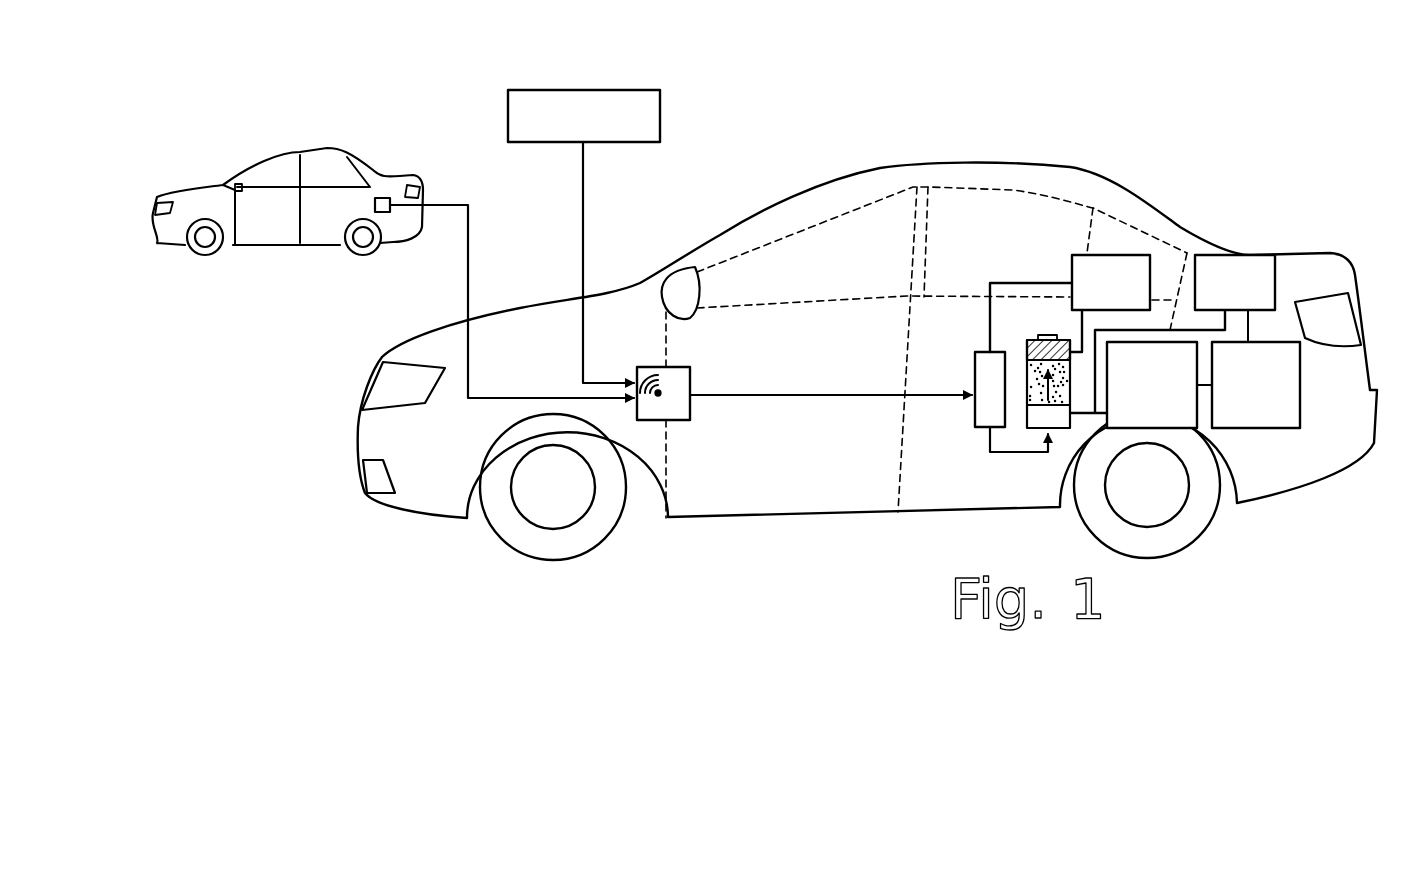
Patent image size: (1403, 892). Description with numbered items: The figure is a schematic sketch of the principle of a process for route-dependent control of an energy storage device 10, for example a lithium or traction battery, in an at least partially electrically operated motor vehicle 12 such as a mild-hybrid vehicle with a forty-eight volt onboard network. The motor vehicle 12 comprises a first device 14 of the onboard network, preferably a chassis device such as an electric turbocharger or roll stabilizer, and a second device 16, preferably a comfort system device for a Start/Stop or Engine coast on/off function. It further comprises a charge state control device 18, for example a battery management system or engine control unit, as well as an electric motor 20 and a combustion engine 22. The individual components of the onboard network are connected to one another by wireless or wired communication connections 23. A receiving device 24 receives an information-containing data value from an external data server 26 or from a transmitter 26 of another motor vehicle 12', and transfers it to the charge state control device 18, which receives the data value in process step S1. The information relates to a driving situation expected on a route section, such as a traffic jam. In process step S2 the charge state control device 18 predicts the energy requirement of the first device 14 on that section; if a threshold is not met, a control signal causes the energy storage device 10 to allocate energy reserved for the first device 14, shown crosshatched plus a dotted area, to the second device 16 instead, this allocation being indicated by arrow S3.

The energy storage device 10 is at (1021, 333).
The motor vehicle 12 is at (867, 327).
The another motor vehicle 12' is at (287, 168).
The first device 14 is at (1127, 255).
The second device 16 is at (1222, 255).
The charge state control device 18 is at (975, 352).
The electric motor 20 is at (1152, 385).
The combustion engine 22 is at (1256, 385).
The communication connection 23 is at (1013, 283).
The receiving device 24 is at (692, 407).
The external data server or transmitter 26 is at (590, 90).
The process step of receiving the data value S1 is at (847, 395).
The process step of predicting the energy requirement S2 is at (975, 375).
The allocation step S3 is at (1040, 383).